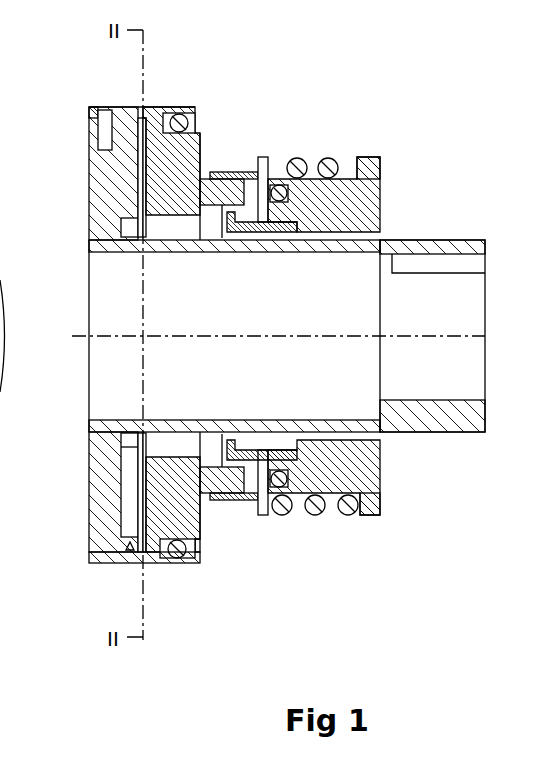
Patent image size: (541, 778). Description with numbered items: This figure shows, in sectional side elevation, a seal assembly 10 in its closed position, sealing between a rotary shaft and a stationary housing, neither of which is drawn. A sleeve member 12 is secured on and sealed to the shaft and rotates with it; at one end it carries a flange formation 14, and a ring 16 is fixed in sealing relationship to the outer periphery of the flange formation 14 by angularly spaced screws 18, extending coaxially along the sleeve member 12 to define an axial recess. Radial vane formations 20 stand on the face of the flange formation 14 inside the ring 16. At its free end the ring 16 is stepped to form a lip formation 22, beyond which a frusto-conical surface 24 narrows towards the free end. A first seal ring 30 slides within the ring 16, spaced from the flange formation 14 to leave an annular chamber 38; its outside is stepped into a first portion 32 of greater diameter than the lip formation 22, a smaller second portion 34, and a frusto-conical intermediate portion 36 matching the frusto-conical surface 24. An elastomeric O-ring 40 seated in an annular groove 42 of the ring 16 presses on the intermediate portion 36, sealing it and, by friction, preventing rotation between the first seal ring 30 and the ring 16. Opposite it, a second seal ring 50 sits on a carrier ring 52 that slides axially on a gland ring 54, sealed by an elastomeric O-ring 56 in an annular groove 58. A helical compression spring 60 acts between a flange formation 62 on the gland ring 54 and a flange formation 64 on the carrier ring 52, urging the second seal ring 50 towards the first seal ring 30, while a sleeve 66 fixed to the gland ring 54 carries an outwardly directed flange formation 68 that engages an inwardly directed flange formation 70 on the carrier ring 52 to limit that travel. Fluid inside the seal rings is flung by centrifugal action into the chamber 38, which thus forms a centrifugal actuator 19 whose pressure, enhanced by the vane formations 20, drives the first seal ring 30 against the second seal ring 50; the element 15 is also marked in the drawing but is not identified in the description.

The seal assembly 10 is at (405, 483).
The sleeve member 12 is at (430, 245).
The flange formation 14 is at (89, 545).
The spring washer 15 is at (128, 544).
The ring 16 is at (125, 552).
The screws 18 is at (100, 115).
The centrifugal actuator 19 is at (103, 103).
The radial vane formations 20 is at (128, 170).
The lip formation 22 is at (164, 555).
The frusto-conical surface 24 is at (197, 125).
The first seal ring 30 is at (148, 199).
The first portion 32 is at (152, 508).
The second portion 34 is at (193, 523).
The frusto-conical intermediate portion 36 is at (170, 155).
The annular chamber 38 is at (142, 148).
The elastomeric O-ring 40 is at (182, 115).
The annular groove 42 is at (183, 548).
The second seal ring 50 is at (210, 185).
The carrier ring 52 is at (235, 172).
The gland ring 54 is at (365, 192).
The elastomeric O-ring 56 is at (303, 172).
The annular groove 58 is at (282, 190).
The helical compression spring 60 is at (333, 178).
The flange formation 62 is at (370, 160).
The flange formation 64 is at (263, 155).
The sleeve 66 is at (290, 443).
The outwardly directed flange formation 68 is at (233, 452).
The inwardly directed flange formation 70 is at (248, 463).